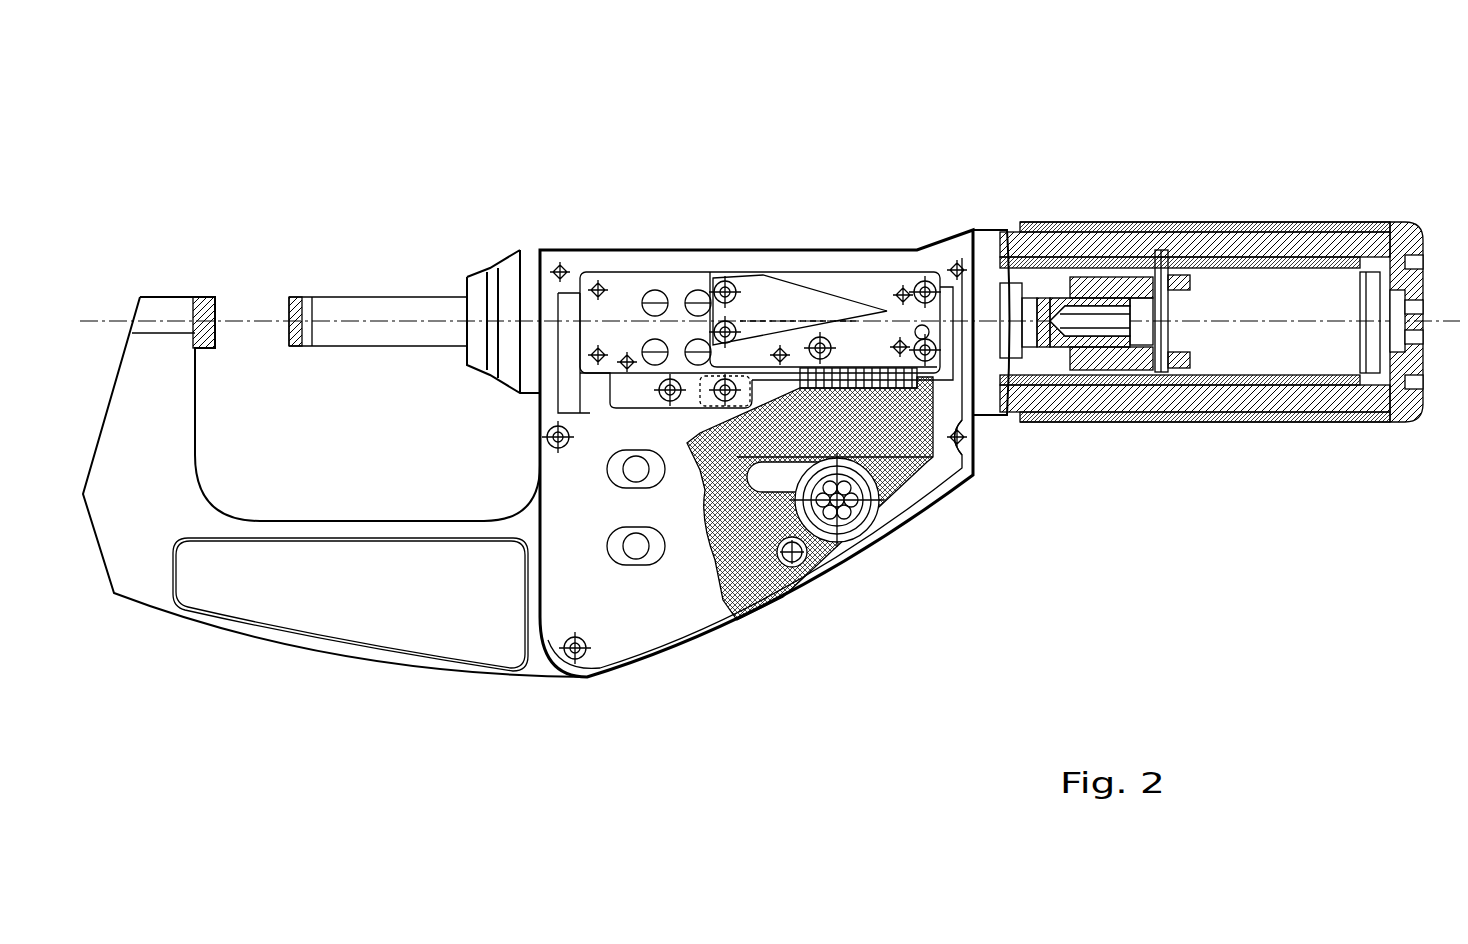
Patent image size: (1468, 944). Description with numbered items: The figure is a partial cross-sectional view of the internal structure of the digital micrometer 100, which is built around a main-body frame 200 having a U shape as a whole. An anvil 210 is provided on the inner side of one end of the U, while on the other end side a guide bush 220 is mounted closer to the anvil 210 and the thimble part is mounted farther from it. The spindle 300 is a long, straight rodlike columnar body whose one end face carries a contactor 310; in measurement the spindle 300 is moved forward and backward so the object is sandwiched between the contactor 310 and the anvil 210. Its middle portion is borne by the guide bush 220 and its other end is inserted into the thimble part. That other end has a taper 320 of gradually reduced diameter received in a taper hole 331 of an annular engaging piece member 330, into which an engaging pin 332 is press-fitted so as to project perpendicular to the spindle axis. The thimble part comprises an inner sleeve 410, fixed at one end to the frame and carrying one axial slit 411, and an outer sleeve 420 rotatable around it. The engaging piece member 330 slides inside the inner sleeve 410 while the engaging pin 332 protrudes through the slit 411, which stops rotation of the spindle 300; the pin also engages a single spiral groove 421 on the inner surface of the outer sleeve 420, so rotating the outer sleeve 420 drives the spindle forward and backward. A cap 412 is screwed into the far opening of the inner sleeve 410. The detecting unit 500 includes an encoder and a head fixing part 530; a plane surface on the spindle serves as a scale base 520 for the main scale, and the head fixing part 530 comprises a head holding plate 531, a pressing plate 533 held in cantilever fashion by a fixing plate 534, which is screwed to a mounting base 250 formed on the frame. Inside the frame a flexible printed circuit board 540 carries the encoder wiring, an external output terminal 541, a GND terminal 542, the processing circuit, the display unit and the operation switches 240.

The digital micrometer 100 is at (853, 187).
The main-body frame 200 is at (143, 593).
The anvil 210 is at (212, 297).
The guide bush 220 is at (478, 278).
The operation switches 240 is at (632, 553).
The mounting base 250 is at (690, 410).
The spindle 300 is at (368, 300).
The contactor 310 is at (298, 297).
The taper 320 is at (1098, 424).
The engaging piece member 330 is at (1137, 278).
The taper hole 331 is at (1100, 300).
The engaging pin 332 is at (1160, 310).
The inner sleeve 410 is at (1012, 418).
The slit 411 is at (1300, 255).
The cap 412 is at (1405, 222).
The outer sleeve 420 is at (1168, 252).
The spiral groove 421 is at (1255, 424).
The detecting unit 500 is at (857, 252).
The scale base 520 is at (1010, 232).
The head fixing part 530 is at (743, 262).
The head holding plate 531 is at (921, 283).
The pressing plate 533 is at (781, 295).
The fixing plate 534 is at (636, 272).
The flexible printed circuit board 540 is at (773, 600).
The external output terminal 541 is at (988, 438).
The GND terminal 542 is at (810, 568).